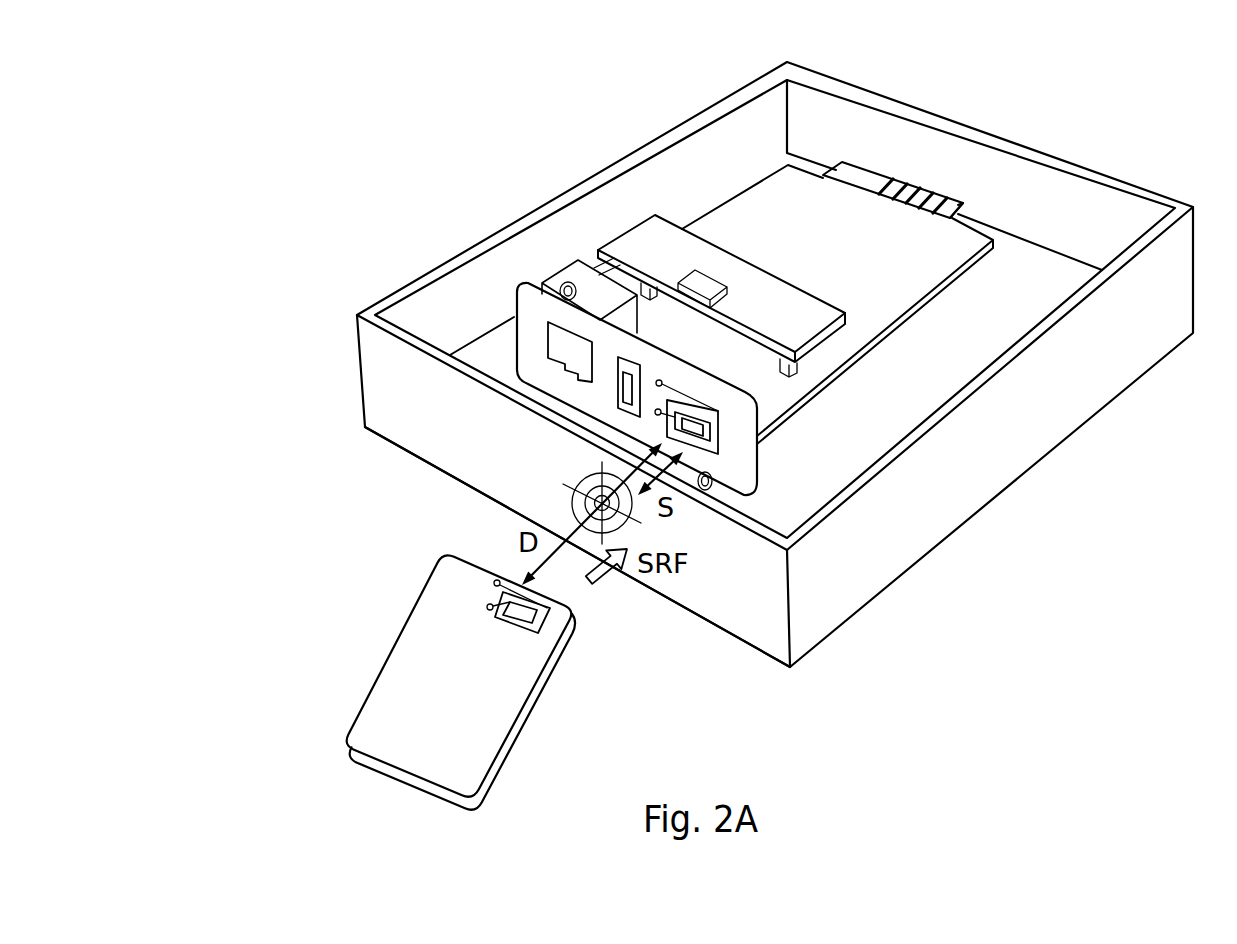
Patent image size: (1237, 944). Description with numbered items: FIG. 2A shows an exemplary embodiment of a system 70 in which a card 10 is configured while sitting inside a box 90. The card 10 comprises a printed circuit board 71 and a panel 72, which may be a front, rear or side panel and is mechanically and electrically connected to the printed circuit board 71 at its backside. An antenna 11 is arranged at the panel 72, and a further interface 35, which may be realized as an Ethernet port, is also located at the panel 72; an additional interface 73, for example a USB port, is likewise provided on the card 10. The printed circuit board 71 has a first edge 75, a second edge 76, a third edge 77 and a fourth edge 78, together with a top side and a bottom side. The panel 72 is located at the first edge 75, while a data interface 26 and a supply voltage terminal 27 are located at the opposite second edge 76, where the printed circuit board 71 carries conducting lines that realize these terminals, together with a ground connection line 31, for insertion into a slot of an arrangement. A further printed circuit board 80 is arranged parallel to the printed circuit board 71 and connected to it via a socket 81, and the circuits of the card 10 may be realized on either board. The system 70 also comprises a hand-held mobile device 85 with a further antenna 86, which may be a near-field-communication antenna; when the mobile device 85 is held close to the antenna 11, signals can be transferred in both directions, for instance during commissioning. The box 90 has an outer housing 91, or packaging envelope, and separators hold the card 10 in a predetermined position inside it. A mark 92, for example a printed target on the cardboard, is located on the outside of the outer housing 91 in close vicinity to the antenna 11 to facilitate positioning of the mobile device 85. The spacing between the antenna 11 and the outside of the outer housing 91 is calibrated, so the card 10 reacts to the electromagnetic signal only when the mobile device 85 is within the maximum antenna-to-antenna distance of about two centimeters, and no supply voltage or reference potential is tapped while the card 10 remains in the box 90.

The card 10 is at (957, 305).
The antenna 11 is at (718, 428).
The data interface 26 is at (960, 195).
The supply voltage terminal 27 is at (885, 183).
The ground connection line 31 is at (965, 198).
The further interface 35 is at (545, 340).
The system 70 is at (268, 247).
The printed circuit board 71 is at (890, 335).
The panel 72 is at (757, 467).
The additional interface 73 is at (632, 360).
The first edge 75 is at (762, 427).
The second edge 76 is at (960, 228).
The third edge 77 is at (717, 213).
The fourth edge 78 is at (903, 315).
The further printed circuit board 80 is at (655, 215).
The socket 81 is at (818, 352).
The mobile device 85 is at (550, 680).
The further antenna 86 is at (543, 617).
The box 90 is at (1150, 108).
The outer housing 91 is at (743, 612).
The mark 92 is at (585, 478).